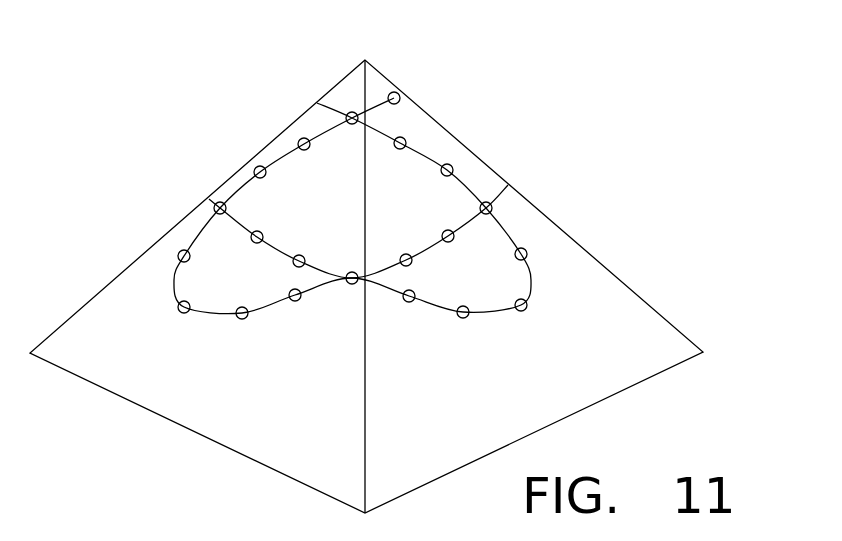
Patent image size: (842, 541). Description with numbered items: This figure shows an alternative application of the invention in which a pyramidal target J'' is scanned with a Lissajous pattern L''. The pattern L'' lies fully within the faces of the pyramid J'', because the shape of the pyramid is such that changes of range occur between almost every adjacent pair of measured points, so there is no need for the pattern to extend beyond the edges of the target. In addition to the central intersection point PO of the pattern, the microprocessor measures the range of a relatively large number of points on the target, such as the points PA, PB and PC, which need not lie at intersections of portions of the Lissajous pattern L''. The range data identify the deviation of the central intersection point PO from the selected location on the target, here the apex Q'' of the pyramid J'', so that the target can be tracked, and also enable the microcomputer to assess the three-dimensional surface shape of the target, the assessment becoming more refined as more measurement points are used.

The apex of the pyramid Q'' is at (417, 256).
The central intersection point PO is at (342, 112).
The measured point PA is at (408, 137).
The measured point PB is at (453, 171).
The measured point PC is at (493, 210).
The pyramidal target J'' is at (366, 286).
The Lissajous pattern L'' is at (352, 247).